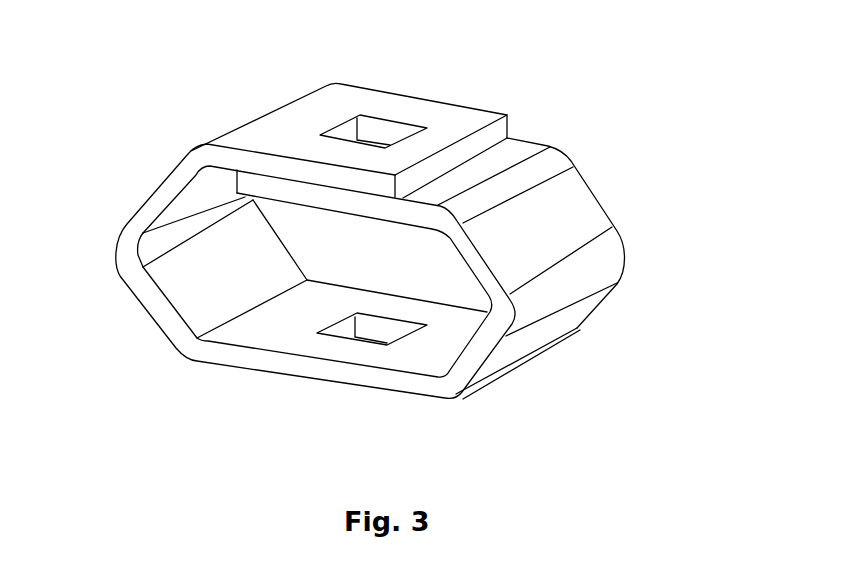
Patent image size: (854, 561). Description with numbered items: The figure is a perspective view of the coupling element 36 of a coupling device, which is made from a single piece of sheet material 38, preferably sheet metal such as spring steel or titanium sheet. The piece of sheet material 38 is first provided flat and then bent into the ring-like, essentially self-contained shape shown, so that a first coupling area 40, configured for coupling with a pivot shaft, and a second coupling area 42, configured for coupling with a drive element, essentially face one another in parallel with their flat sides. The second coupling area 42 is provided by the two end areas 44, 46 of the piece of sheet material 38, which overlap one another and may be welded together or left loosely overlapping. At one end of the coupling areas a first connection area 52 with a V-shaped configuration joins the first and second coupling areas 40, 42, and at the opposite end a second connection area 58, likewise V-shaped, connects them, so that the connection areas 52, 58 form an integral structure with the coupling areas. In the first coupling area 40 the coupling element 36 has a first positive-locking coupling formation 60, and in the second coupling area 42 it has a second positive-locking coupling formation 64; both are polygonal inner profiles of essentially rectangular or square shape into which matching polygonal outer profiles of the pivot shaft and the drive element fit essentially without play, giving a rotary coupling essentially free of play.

The coupling element 36 is at (228, 393).
The piece of sheet material 38 is at (510, 353).
The first coupling area 40 is at (307, 393).
The second coupling area 42 is at (452, 102).
The end area 44 is at (280, 192).
The end area 46 is at (477, 121).
The first connection area 52 is at (130, 273).
The second connection area 58 is at (607, 227).
The first positive-locking coupling formation 60 is at (402, 348).
The second positive-locking coupling formation 64 is at (313, 123).